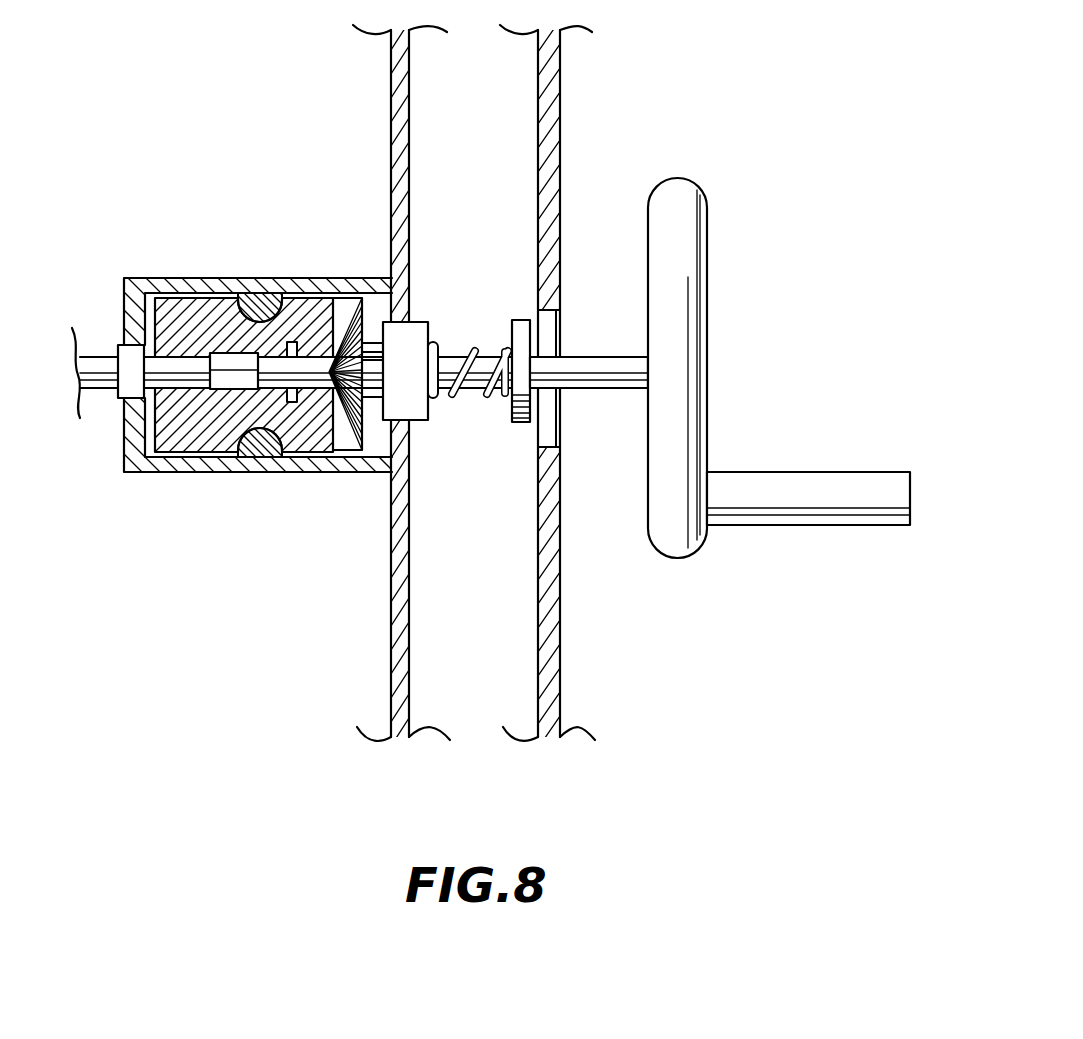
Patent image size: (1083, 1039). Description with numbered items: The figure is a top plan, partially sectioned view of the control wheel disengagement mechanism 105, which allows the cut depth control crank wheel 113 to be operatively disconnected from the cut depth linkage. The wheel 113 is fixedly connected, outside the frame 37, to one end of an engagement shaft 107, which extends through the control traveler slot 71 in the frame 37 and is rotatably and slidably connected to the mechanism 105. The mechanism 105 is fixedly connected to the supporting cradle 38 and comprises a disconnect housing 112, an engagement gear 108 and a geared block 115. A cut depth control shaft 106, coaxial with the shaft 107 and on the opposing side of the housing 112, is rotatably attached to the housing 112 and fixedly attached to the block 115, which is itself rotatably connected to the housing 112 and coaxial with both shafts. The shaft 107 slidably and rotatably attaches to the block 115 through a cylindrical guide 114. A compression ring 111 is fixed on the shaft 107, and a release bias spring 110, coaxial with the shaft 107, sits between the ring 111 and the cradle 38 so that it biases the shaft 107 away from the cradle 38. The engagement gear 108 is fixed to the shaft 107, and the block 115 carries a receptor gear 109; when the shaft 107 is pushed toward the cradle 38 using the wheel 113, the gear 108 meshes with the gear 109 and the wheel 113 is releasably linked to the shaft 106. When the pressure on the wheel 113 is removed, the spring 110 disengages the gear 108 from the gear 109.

The frame 37 is at (553, 120).
The supporting cradle 38 is at (407, 120).
The control traveler slot 71 is at (550, 418).
The control wheel disengagement mechanism 105 is at (320, 278).
The cut depth control shaft 106 is at (100, 365).
The engagement shaft 107 is at (623, 362).
The engagement gear 108 is at (360, 440).
The receptor gear 109 is at (290, 447).
The release bias spring 110 is at (470, 343).
The compression ring 111 is at (518, 422).
The disconnect housing 112 is at (127, 458).
The cut depth control crank wheel 113 is at (697, 259).
The cylindrical guide 114 is at (185, 453).
The geared block 115 is at (183, 300).